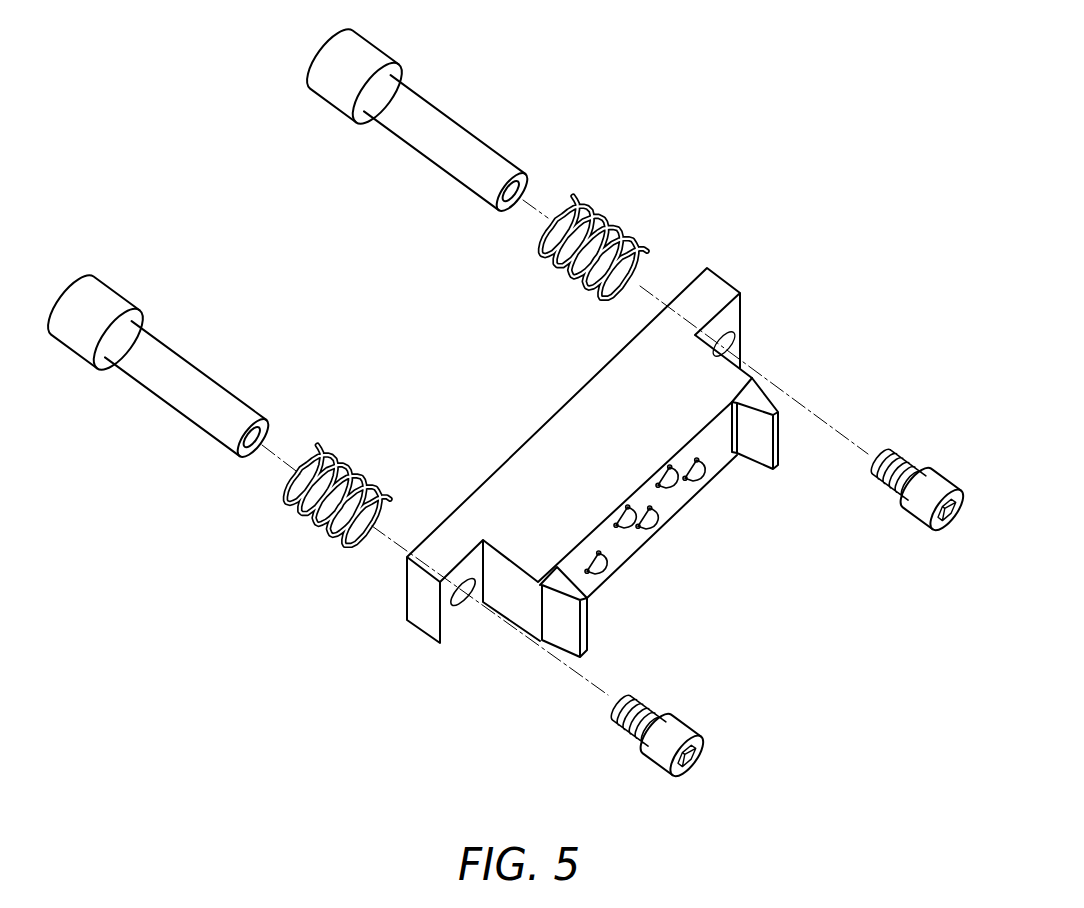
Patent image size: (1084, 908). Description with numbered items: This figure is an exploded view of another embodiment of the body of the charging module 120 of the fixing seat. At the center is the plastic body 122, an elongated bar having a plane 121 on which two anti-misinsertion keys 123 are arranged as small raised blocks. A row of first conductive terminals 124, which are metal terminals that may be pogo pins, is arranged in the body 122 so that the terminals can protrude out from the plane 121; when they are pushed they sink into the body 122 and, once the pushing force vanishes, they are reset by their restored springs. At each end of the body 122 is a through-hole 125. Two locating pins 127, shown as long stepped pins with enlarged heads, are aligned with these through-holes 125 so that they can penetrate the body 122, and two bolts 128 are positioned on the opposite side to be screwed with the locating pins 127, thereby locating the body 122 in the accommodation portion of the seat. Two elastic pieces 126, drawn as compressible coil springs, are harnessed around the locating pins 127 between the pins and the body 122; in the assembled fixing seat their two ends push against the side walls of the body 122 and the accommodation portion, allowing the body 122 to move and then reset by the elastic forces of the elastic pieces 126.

The charging module 120 is at (88, 54).
The plane 121 is at (718, 450).
The body 122 is at (523, 473).
The anti-misinsertion key 123 is at (587, 642).
The first conductive terminal 124 is at (657, 527).
The through-hole 125 is at (462, 590).
The elastic piece 126 is at (317, 523).
The locating pin 127 is at (185, 380).
The bolt 128 is at (657, 758).